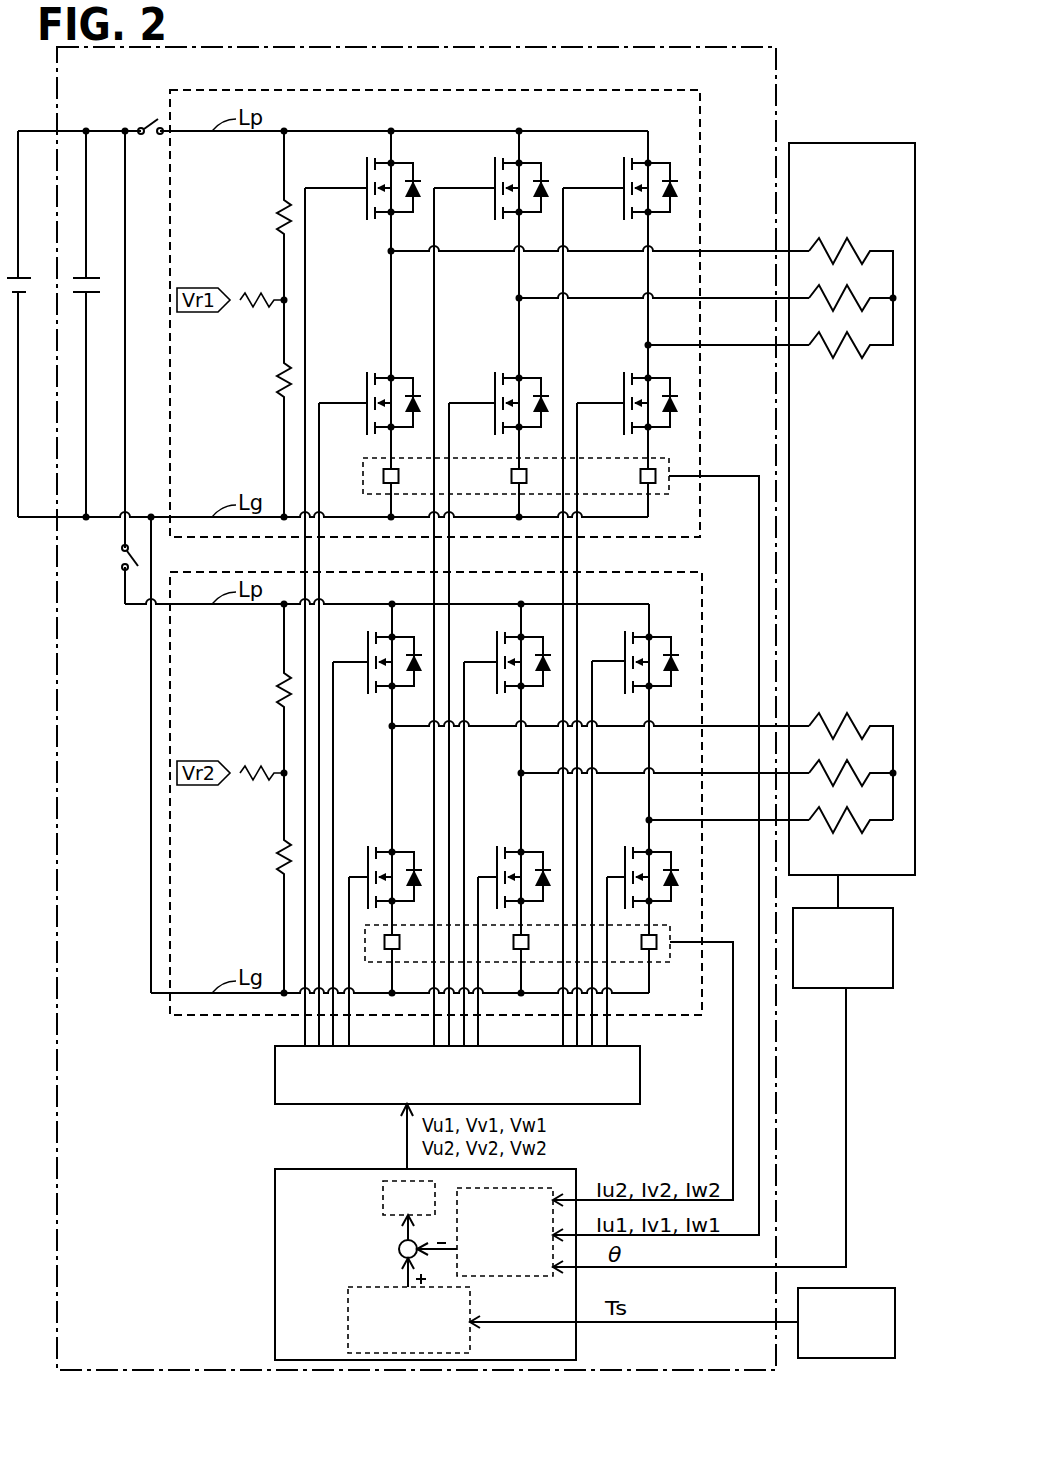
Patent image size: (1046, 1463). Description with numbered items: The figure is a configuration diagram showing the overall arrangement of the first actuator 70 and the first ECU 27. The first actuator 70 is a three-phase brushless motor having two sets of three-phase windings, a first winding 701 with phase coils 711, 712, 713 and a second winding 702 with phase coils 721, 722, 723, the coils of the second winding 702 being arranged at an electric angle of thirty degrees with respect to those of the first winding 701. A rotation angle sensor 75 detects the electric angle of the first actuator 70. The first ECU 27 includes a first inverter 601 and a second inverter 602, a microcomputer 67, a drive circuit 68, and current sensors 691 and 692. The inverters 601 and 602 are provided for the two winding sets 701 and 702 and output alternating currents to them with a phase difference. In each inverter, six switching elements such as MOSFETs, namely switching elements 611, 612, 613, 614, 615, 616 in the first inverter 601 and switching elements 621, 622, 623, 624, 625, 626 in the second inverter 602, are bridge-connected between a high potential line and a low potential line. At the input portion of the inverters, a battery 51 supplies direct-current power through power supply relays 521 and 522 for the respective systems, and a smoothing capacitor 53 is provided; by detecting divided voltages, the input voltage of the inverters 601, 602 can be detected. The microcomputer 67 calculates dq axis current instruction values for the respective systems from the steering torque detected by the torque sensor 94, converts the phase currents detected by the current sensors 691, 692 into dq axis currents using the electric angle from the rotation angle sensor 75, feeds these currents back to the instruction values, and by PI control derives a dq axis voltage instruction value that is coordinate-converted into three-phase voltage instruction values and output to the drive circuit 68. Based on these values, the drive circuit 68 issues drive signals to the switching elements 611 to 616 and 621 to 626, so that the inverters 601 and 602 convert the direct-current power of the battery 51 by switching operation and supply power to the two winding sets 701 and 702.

The first ECU 27 is at (777, 98).
The battery 51 is at (26, 277).
The smoothing capacitor 53 is at (94, 277).
The power supply relay 521 is at (142, 127).
The power supply relay 522 is at (121, 558).
The first inverter 601 is at (210, 90).
The second inverter 602 is at (210, 572).
The switching element 611 is at (377, 162).
The switching element 612 is at (506, 162).
The switching element 613 is at (660, 162).
The switching element 614 is at (403, 368).
The switching element 615 is at (530, 368).
The switching element 616 is at (645, 372).
The switching element 621 is at (377, 635).
The switching element 622 is at (506, 635).
The switching element 623 is at (660, 635).
The switching element 624 is at (403, 843).
The switching element 625 is at (530, 843).
The switching element 626 is at (645, 848).
The current sensor 691 is at (663, 458).
The current sensor 692 is at (663, 925).
The drive circuit 68 is at (275, 1073).
The microcomputer 67 is at (275, 1252).
The first actuator 70 is at (873, 143).
The first winding 701 is at (845, 403).
The second winding 702 is at (847, 687).
The phase coil 711 is at (853, 248).
The phase coil 712 is at (852, 296).
The phase coil 713 is at (862, 350).
The phase coil 721 is at (855, 722).
The phase coil 722 is at (853, 771).
The phase coil 723 is at (870, 826).
The rotation angle sensor 75 is at (893, 938).
The torque sensor 94 is at (895, 1322).